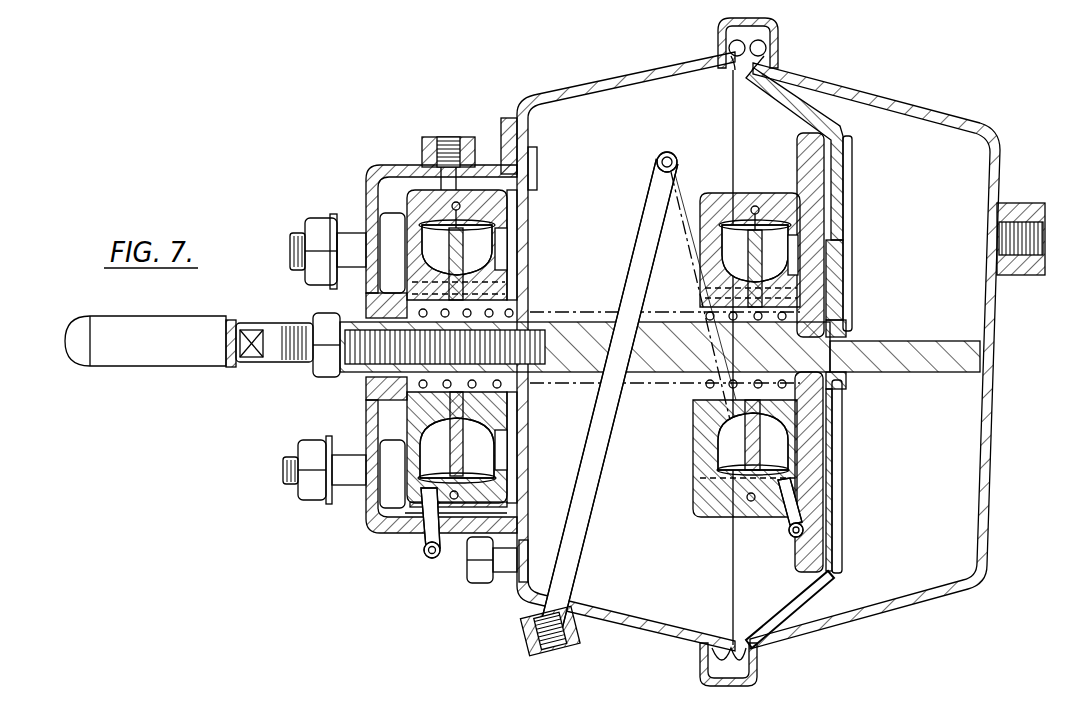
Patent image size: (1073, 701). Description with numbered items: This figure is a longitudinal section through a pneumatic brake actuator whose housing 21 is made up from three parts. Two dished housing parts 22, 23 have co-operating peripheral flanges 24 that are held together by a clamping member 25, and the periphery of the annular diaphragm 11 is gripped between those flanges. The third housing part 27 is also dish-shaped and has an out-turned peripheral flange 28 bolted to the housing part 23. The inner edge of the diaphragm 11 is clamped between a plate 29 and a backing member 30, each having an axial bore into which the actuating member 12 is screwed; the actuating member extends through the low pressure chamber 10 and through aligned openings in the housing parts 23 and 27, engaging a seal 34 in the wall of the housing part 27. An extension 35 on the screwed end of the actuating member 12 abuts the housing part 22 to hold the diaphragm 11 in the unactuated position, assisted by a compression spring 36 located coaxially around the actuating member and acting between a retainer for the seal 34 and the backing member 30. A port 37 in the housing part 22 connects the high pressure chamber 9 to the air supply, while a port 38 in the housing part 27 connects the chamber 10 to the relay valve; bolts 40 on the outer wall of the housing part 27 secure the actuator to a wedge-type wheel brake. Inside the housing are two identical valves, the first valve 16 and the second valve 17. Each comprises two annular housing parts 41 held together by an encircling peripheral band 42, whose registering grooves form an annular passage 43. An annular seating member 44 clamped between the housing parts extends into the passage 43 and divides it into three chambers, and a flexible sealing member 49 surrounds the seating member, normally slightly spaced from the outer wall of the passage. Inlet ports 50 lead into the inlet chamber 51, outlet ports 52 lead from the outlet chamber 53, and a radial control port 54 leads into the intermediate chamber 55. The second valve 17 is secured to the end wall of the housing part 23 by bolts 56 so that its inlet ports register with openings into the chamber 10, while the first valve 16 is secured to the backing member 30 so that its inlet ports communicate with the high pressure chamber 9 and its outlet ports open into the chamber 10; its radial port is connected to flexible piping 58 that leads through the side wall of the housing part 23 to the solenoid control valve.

The high pressure chamber 9 is at (916, 459).
The low pressure chamber 10 is at (657, 479).
The annular diaphragm 11 is at (793, 593).
The actuating member 12 is at (171, 367).
The first valve 16 is at (716, 522).
The second valve 17 is at (401, 185).
The housing 21 is at (875, 81).
The dished housing part 22 is at (800, 628).
The dished housing part 23 is at (628, 630).
The peripheral flanges 24 is at (732, 42).
The clamping member 25 is at (738, 25).
The third housing part 27 is at (377, 523).
The out-turned peripheral flange 28 is at (493, 585).
The plate 29 is at (868, 353).
The backing member 30 is at (810, 151).
The seal 34 is at (368, 383).
The extension 35 is at (963, 355).
The compression spring 36 is at (365, 298).
The port 37 is at (1025, 203).
The port 38 is at (437, 160).
The bolts 40 is at (293, 233).
The annular housing parts 41 is at (470, 232).
The encircling peripheral band 42 is at (492, 187).
The annular passage 43 is at (480, 430).
The annular seating member 44 is at (440, 411).
The flexible sealing member 49 is at (470, 463).
The inlet ports 50 is at (503, 246).
The inlet chamber 51 is at (476, 240).
The outlet ports 52 is at (408, 247).
The outlet chamber 53 is at (437, 452).
The radial control port 54 is at (422, 516).
The intermediate chamber 55 is at (500, 484).
The bolts 56 is at (520, 290).
The flexible piping 58 is at (592, 505).